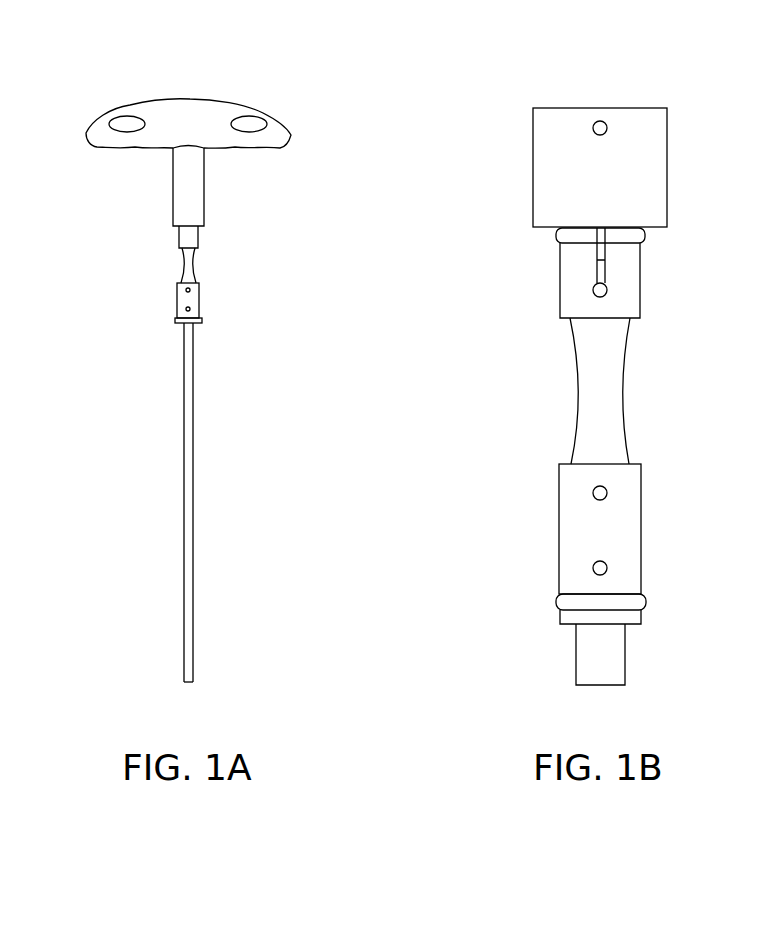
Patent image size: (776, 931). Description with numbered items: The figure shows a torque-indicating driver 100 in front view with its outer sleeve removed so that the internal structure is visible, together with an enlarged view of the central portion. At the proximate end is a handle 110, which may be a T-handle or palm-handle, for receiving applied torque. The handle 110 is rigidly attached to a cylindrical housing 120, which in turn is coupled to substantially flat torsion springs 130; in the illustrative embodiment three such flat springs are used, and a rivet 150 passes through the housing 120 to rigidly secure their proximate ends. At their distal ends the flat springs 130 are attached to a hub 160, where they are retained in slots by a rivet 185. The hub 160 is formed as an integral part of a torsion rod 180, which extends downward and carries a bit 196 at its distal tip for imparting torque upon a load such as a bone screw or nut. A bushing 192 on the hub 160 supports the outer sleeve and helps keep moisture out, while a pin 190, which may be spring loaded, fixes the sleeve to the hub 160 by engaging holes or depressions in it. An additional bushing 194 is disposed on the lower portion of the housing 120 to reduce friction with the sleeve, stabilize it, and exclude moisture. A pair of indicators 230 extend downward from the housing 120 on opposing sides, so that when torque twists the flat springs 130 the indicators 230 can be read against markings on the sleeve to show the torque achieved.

In FIG. 1A, the torque-indicating driver 100 is at (268, 94).
In FIG. 1A, the handle 110 is at (291, 134).
In FIG. 1A, the cylindrical housing 120 is at (205, 188).
In FIG. 1B, the cylindrical housing 120 is at (668, 167).
In FIG. 1A, the flat torsion springs 130 is at (195, 263).
In FIG. 1B, the flat torsion springs 130 is at (624, 387).
In FIG. 1B, the rivet 150 is at (607, 290).
In FIG. 1A, the hub 160 is at (199, 298).
In FIG. 1B, the hub 160 is at (642, 523).
In FIG. 1A, the torsion rod 180 is at (193, 420).
In FIG. 1B, the torsion rod 180 is at (625, 655).
In FIG. 1B, the rivet 185 is at (607, 491).
In FIG. 1B, the pin 190 is at (607, 567).
In FIG. 1B, the bushing 192 is at (646, 598).
In FIG. 1B, the bushing 194 is at (645, 235).
In FIG. 1A, the bit 196 is at (193, 678).
In FIG. 1B, the indicators 230 is at (597, 262).